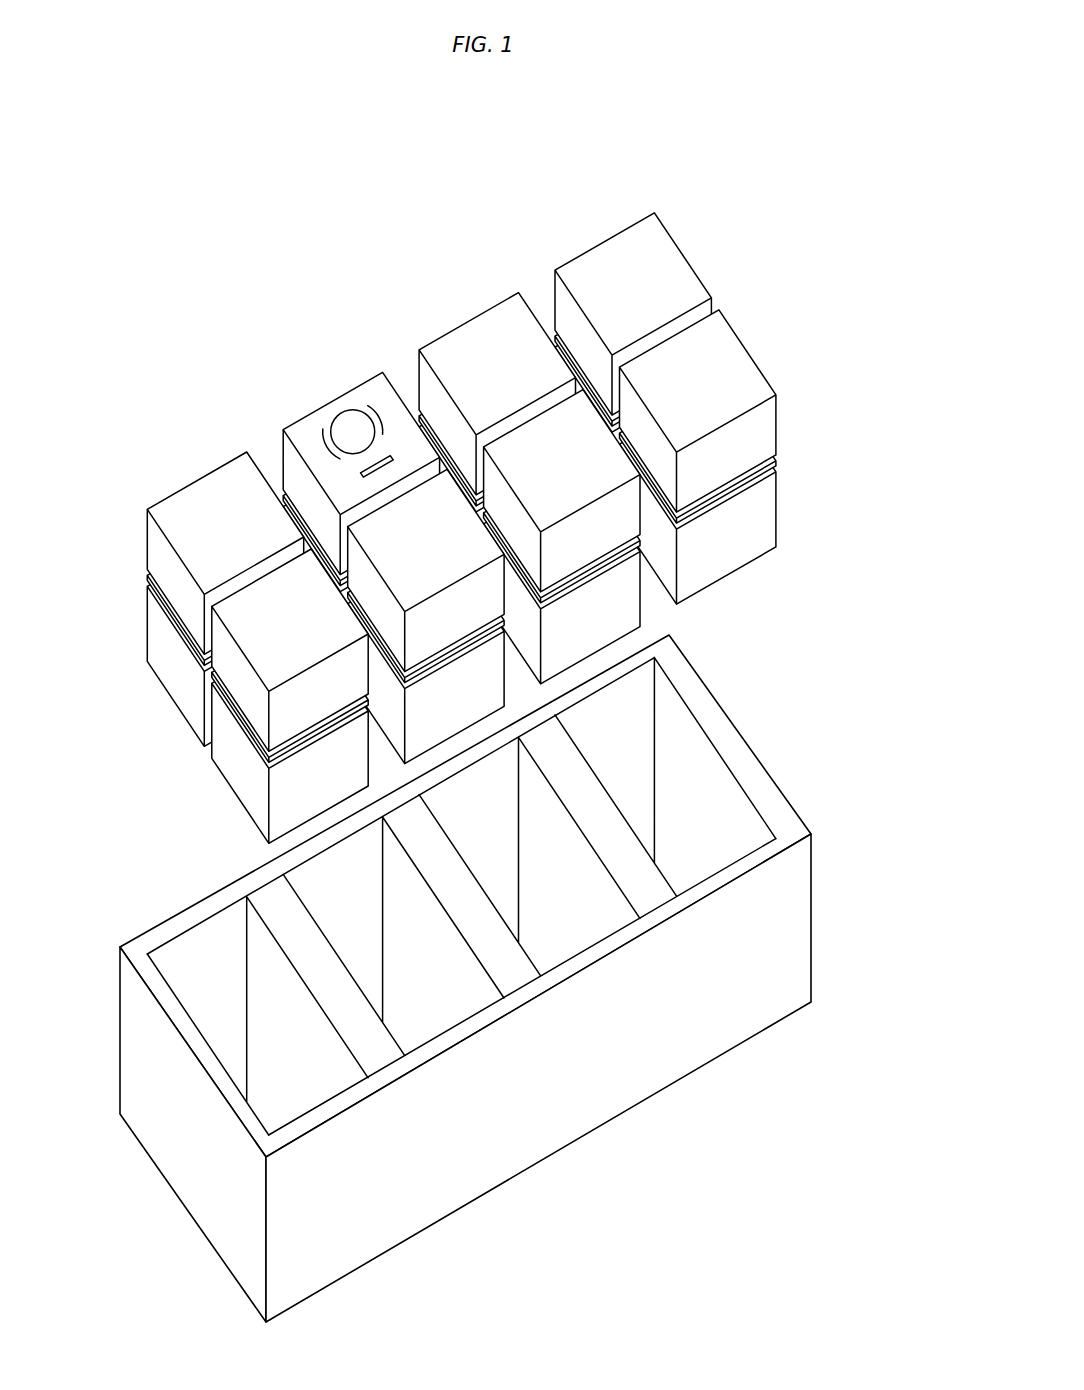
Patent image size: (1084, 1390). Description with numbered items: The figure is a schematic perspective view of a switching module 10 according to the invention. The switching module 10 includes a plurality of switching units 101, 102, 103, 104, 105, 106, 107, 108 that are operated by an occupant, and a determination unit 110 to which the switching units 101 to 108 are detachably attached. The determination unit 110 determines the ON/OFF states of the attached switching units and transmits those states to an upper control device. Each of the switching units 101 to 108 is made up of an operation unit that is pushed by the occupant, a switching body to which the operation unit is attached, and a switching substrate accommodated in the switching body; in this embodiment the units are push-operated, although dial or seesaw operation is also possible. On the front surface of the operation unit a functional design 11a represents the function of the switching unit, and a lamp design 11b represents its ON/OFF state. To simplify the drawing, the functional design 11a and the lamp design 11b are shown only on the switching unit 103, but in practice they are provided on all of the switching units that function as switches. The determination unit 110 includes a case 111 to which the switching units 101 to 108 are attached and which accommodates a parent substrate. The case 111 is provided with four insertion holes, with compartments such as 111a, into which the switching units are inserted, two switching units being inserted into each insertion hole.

The switching module 10 is at (850, 186).
The functional design 11a is at (347, 423).
The lamp design 11b is at (360, 473).
The switching unit 101 is at (182, 572).
The switching unit 102 is at (213, 705).
The switching unit 103 is at (337, 480).
The switching unit 104 is at (472, 596).
The switching unit 105 is at (470, 320).
The switching unit 106 is at (612, 527).
The switching unit 107 is at (662, 227).
The switching unit 108 is at (745, 451).
The determination unit 110 is at (530, 978).
The case 111 is at (680, 1040).
The compartment 111a is at (697, 792).